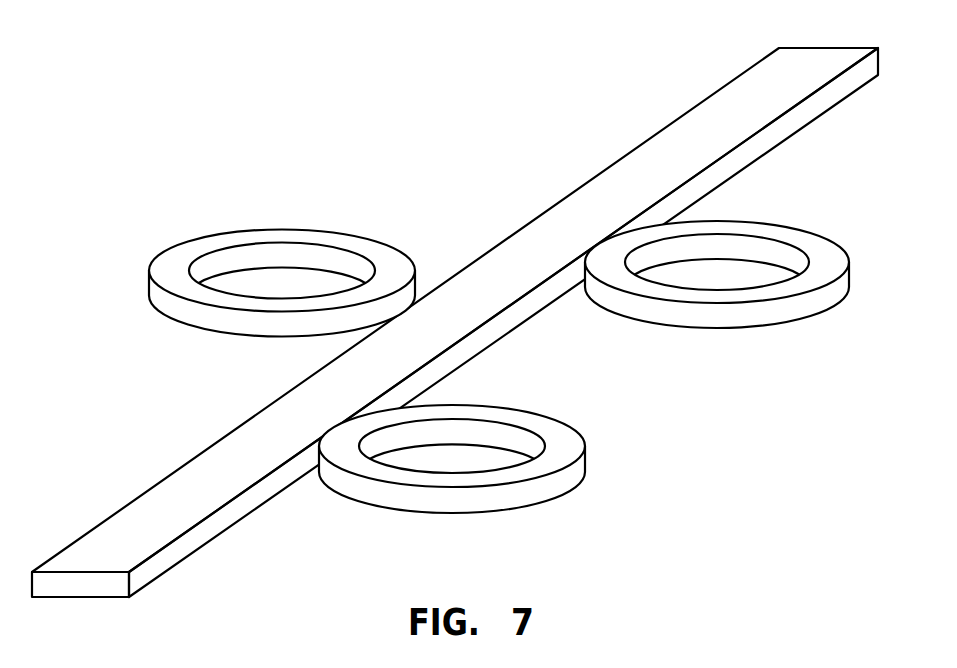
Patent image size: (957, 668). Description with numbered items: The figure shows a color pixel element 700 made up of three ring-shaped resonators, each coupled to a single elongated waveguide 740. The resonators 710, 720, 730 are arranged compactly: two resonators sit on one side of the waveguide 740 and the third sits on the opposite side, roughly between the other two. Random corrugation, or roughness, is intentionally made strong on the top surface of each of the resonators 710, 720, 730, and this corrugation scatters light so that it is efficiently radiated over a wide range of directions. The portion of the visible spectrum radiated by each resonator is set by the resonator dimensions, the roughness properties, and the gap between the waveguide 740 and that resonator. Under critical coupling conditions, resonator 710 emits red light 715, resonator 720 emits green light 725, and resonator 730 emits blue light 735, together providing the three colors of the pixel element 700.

The color pixel element 700 is at (360, 93).
The resonator 710 is at (585, 455).
The red light 715 is at (555, 435).
The resonator 720 is at (849, 272).
The green light 725 is at (818, 252).
The resonator 730 is at (149, 289).
The blue light 735 is at (183, 252).
The waveguide 740 is at (587, 183).